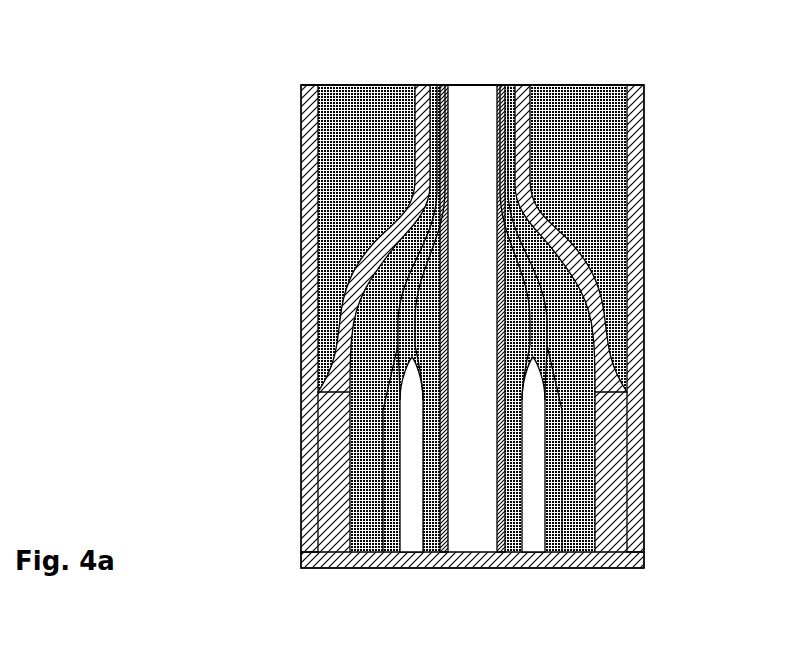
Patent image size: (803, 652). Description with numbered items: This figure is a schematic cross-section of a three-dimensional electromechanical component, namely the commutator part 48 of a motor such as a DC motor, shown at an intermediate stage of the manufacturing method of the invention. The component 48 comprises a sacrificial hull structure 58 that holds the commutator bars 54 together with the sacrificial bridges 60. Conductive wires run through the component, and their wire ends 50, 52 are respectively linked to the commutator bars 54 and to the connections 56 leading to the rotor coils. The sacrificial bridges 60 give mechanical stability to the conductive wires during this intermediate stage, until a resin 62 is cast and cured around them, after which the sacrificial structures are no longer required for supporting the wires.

The commutator part 48 is at (742, 496).
The conductive wire end 50 is at (600, 358).
The conductive wire end 52 is at (537, 88).
The commutator bars 54 is at (605, 408).
The connections to the rotor coils 56 is at (510, 85).
The sacrificial hull structure 58 is at (640, 170).
The sacrificial bridges 60 is at (365, 84).
The resin 62 is at (603, 235).